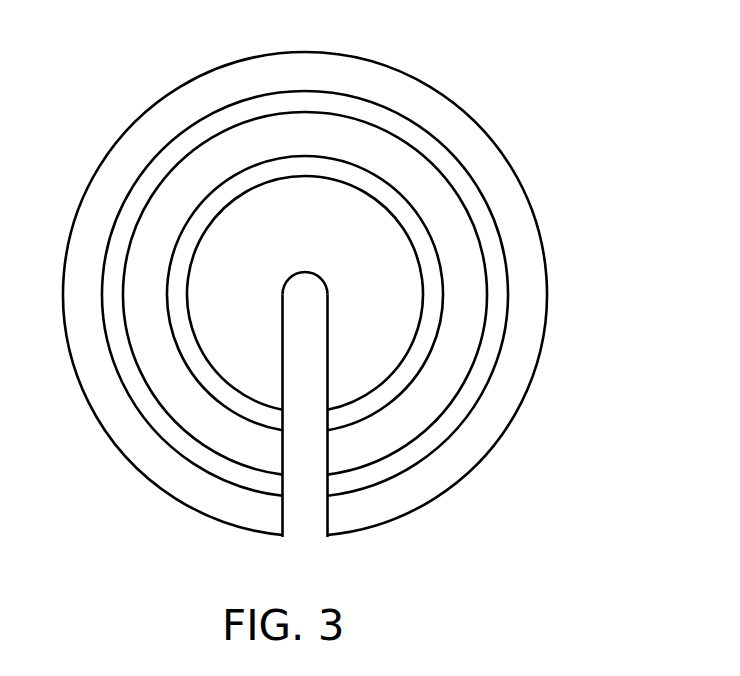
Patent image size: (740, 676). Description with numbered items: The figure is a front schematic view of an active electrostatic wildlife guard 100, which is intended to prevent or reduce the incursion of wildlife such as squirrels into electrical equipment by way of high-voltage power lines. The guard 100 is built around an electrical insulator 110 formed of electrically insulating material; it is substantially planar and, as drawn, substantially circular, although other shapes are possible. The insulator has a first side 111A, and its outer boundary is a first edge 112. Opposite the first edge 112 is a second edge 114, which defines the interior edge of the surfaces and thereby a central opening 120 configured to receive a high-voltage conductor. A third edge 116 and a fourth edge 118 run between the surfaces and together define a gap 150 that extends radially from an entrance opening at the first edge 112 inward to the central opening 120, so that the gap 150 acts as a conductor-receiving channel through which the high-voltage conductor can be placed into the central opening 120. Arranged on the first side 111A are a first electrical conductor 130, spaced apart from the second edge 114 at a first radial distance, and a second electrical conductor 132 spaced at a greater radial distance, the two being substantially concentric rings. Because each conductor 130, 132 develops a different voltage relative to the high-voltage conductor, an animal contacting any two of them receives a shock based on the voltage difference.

The active electrostatic wildlife guard 100 is at (556, 125).
The electrical insulator 110 is at (422, 98).
The first side 111A is at (527, 265).
The first edge 112 is at (545, 327).
The second edge 114 is at (300, 272).
The third edge 116 is at (282, 510).
The fourth edge 118 is at (327, 508).
The central opening 120 is at (310, 288).
The first electrical conductor 130 is at (322, 165).
The second electrical conductor 132 is at (503, 275).
The gap 150 is at (307, 430).